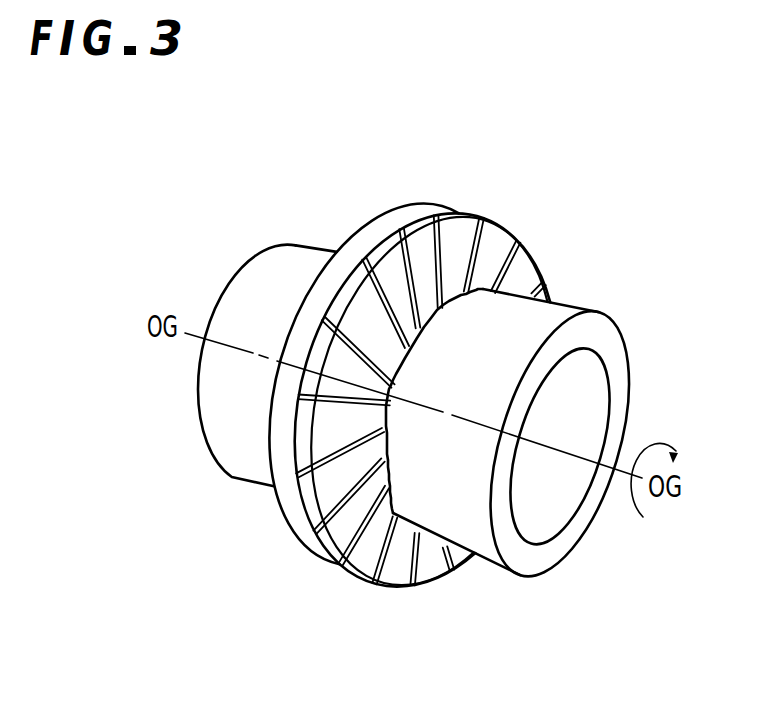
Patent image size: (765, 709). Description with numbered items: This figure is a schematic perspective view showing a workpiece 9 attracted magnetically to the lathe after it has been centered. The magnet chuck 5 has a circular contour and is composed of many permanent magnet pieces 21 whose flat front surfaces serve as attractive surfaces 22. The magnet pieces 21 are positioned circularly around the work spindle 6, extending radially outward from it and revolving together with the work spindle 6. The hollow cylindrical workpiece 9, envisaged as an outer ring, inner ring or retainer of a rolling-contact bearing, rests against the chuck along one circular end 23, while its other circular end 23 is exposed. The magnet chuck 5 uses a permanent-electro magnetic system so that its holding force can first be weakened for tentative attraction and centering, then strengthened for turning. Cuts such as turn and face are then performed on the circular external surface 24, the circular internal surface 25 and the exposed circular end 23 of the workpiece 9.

The magnet chuck 5 is at (378, 403).
The work spindle 6 is at (270, 283).
The workpiece 9 is at (536, 429).
The permanent magnet pieces 21 is at (368, 540).
The attractive surfaces 22 is at (402, 542).
The circular end 23 is at (527, 567).
The circular external surface 24 is at (523, 337).
The circular internal surface 25 is at (553, 512).